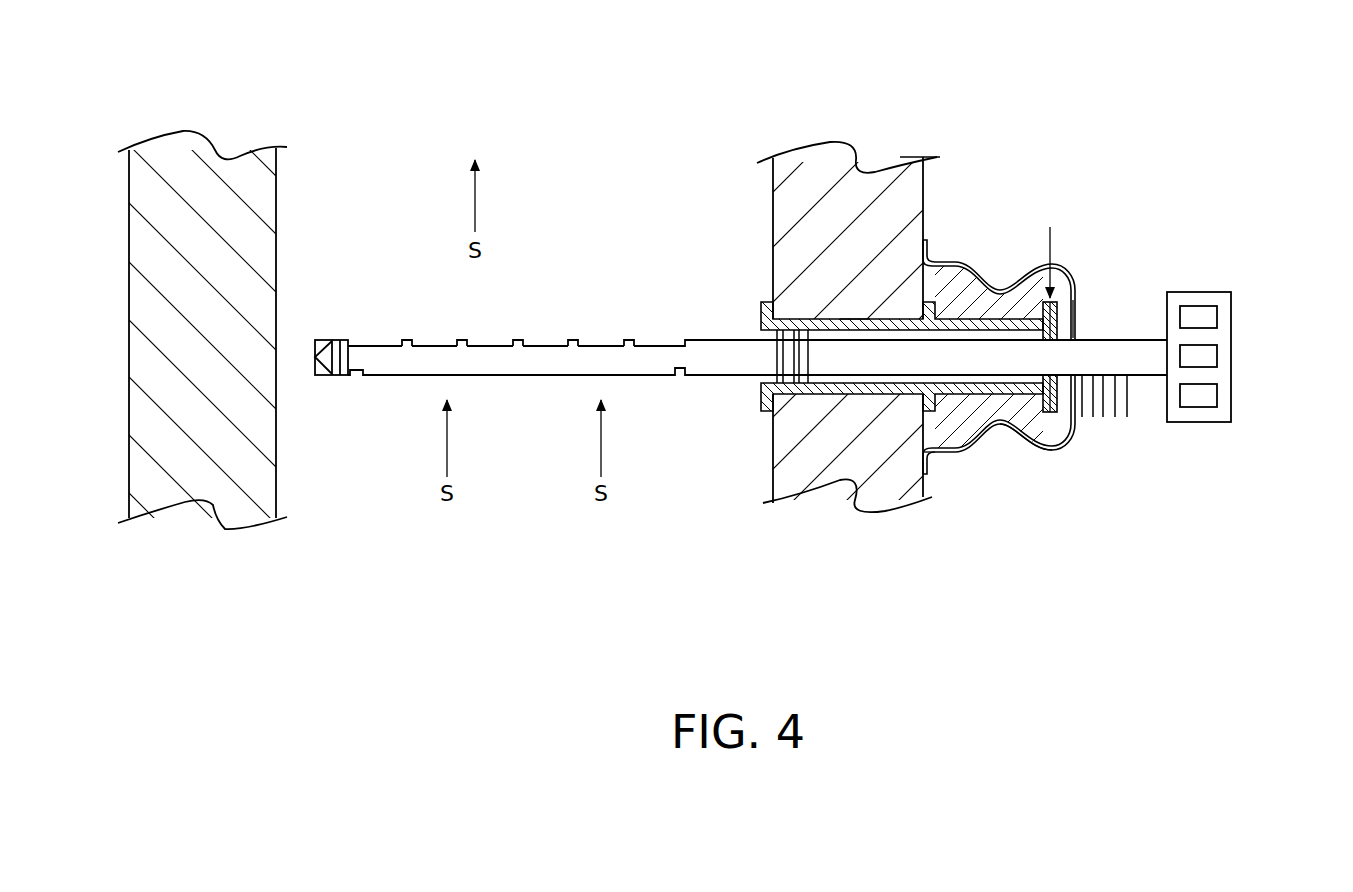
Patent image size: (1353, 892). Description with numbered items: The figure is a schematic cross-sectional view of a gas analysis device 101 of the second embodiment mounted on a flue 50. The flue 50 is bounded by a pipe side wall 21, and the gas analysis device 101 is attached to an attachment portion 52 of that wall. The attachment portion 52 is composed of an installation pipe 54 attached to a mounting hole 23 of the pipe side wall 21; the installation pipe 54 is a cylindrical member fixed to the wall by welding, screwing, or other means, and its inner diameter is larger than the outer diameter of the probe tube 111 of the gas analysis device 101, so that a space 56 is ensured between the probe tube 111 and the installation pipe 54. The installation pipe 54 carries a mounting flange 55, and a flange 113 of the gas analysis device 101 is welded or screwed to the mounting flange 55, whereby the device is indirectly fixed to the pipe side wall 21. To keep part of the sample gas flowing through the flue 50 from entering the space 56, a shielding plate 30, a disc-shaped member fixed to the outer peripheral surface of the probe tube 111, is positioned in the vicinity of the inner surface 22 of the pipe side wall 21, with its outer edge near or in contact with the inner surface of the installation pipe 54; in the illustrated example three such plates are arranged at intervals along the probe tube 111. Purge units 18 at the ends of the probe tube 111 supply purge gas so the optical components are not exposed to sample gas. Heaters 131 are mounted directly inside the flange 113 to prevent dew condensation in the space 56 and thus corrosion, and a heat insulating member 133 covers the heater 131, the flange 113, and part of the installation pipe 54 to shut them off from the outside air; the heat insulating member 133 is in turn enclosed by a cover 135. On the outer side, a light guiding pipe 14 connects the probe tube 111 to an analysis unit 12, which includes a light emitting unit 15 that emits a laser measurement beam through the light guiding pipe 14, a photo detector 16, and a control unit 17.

The gas analysis device 101 is at (999, 128).
The pipe side wall 21 is at (302, 187).
The inner surface 22 is at (773, 220).
The mounting hole 23 is at (856, 328).
The shielding plate 30 is at (768, 415).
The flue 50 is at (530, 554).
The purge unit 18 is at (477, 345).
The probe tube 111 is at (515, 367).
The light guiding pipe 14 is at (1110, 338).
The analysis unit 12 is at (1234, 312).
The light emitting unit 15 is at (1217, 317).
The photo detector 16 is at (1217, 356).
The control unit 17 is at (1217, 395).
The heater 131 is at (1055, 310).
The heat insulating member 133 is at (957, 290).
The cover 135 is at (1007, 283).
The flange 113 is at (1075, 305).
The attachment portion 52 is at (942, 428).
The installation pipe 54 is at (900, 394).
The mounting flange 55 is at (1013, 433).
The space 56 is at (850, 394).